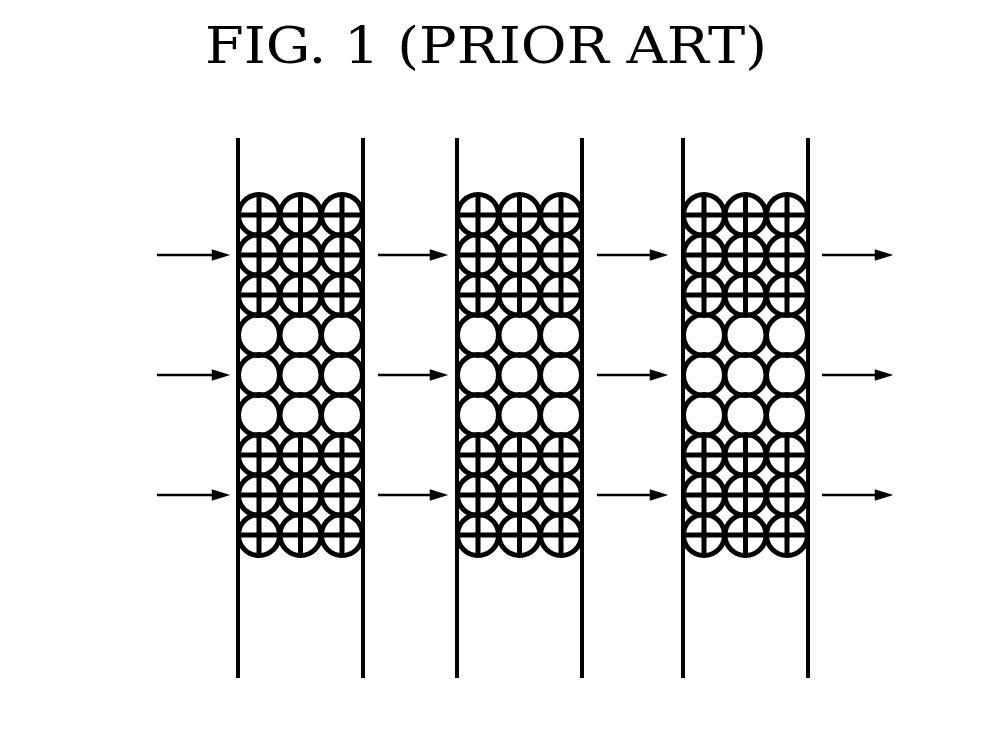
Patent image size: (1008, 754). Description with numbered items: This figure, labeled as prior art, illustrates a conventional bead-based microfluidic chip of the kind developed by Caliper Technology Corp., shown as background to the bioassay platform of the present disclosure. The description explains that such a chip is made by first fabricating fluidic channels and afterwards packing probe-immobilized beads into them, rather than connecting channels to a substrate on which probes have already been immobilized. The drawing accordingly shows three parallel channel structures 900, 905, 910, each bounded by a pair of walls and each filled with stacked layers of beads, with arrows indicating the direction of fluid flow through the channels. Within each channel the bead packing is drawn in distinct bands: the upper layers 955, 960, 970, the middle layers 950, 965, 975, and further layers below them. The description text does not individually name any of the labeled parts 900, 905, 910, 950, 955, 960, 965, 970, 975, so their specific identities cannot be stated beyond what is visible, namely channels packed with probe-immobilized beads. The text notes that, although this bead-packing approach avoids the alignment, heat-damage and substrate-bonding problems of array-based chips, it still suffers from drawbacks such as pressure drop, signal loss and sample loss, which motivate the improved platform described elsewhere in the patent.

The first reactor 900 is at (222, 426).
The second reactor 905 is at (555, 426).
The third reactor 910 is at (785, 426).
The second catalyst layer of first reactor 950 is at (240, 335).
The first catalyst layer of first reactor 955 is at (238, 213).
The first catalyst layer of second reactor 960 is at (582, 213).
The second catalyst layer of second reactor 965 is at (582, 335).
The first catalyst layer of third reactor 970 is at (808, 213).
The second catalyst layer of third reactor 975 is at (808, 335).